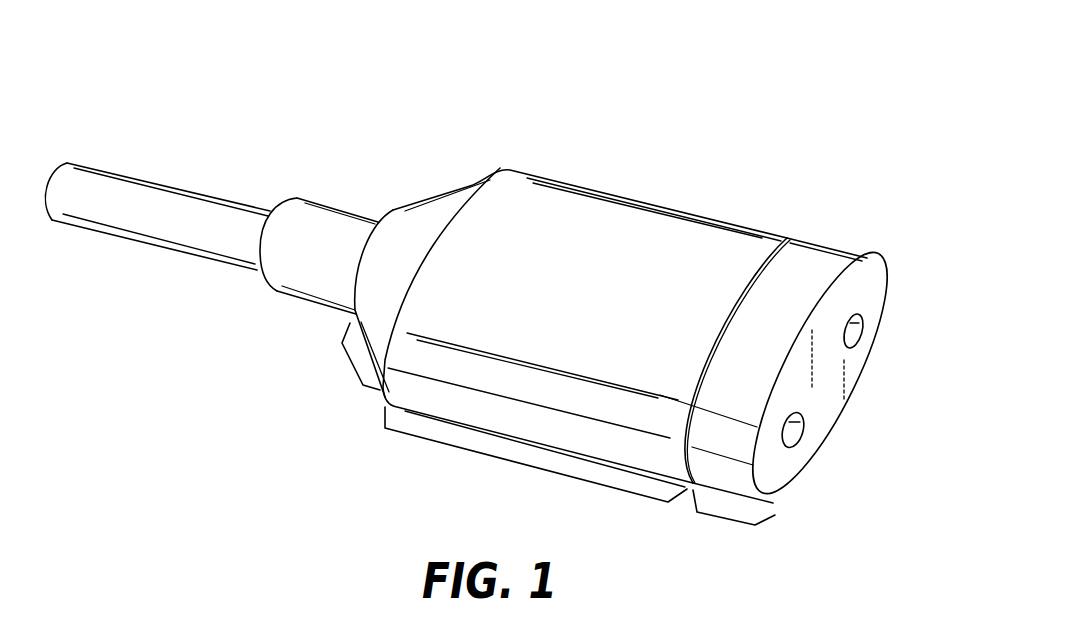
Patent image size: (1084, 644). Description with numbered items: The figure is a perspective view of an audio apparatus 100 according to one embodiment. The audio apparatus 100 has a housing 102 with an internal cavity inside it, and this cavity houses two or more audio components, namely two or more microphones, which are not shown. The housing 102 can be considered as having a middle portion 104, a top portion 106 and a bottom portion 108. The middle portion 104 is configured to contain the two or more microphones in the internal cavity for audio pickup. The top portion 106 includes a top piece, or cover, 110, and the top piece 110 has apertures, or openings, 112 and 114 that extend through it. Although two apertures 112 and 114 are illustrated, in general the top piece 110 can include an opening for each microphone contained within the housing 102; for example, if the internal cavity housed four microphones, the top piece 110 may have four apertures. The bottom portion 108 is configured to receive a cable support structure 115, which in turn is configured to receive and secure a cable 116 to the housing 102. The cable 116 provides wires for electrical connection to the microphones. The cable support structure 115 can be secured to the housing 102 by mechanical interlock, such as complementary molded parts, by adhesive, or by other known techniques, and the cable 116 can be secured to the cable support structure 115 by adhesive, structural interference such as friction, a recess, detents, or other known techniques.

The audio apparatus 100 is at (760, 112).
The housing 102 is at (558, 223).
The middle portion 104 is at (528, 470).
The top portion 106 is at (733, 520).
The bottom portion 108 is at (353, 368).
The top piece 110 is at (807, 473).
The aperture 112 is at (857, 330).
The aperture 114 is at (797, 427).
The cable support structure 115 is at (327, 230).
The cable 116 is at (182, 213).